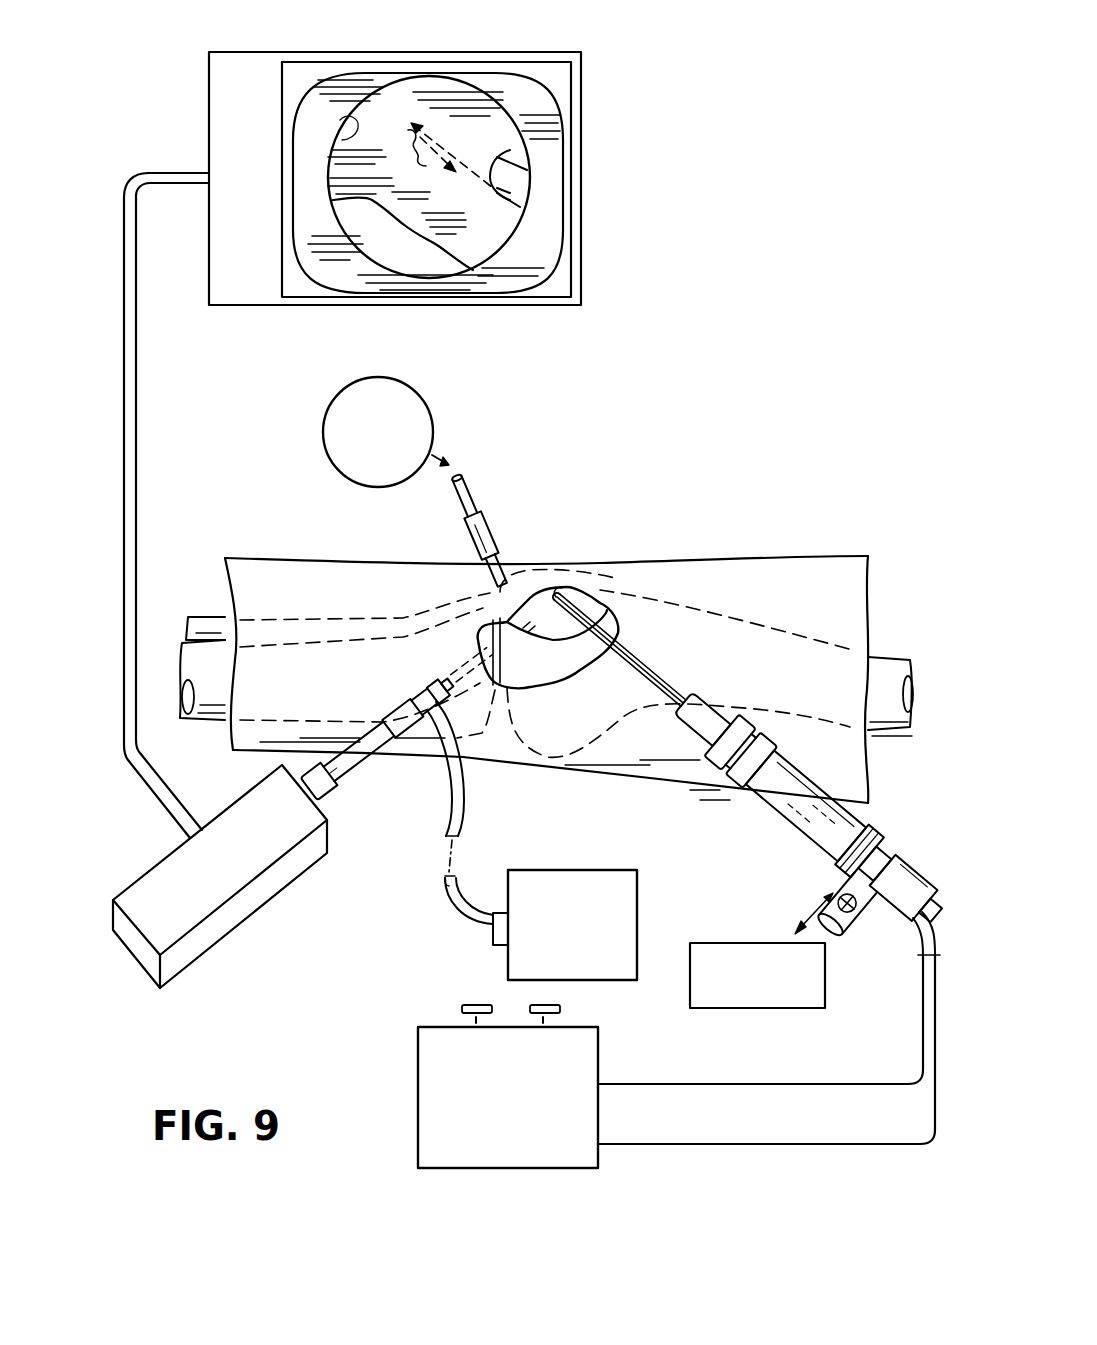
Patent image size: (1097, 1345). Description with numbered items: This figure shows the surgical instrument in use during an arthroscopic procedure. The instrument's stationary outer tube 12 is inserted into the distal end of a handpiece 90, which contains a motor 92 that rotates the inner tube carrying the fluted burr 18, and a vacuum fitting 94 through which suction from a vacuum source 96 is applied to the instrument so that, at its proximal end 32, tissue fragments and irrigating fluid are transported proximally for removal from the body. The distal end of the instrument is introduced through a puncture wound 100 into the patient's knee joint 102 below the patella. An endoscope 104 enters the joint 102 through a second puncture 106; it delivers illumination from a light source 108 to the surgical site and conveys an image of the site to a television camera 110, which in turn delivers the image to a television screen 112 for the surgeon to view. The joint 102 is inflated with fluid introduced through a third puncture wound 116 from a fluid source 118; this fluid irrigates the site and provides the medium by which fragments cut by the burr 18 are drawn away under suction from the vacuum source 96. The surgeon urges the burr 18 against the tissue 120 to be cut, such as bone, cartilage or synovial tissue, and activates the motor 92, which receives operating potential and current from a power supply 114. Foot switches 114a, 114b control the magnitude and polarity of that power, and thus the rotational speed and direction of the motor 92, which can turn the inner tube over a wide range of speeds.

The outer tube 12 is at (641, 660).
The fluted burr 18 is at (415, 155).
The proximal end 32 is at (688, 731).
The handpiece 90 is at (790, 825).
The motor 92 is at (832, 832).
The vacuum fitting 94 is at (858, 890).
The vacuum source 96 is at (746, 942).
The puncture wound 100 is at (583, 605).
The knee joint 102 is at (433, 598).
The endoscope 104 is at (358, 762).
The second puncture 106 is at (446, 692).
The light source 108 is at (531, 870).
The television camera 110 is at (275, 882).
The television screen 112 is at (588, 228).
The power supply 114 is at (418, 1089).
The foot switch 114a is at (465, 1004).
The foot switch 114b is at (562, 1008).
The third puncture wound 116 is at (505, 568).
The fluid source 118 is at (405, 383).
The tissue 120 is at (426, 147).